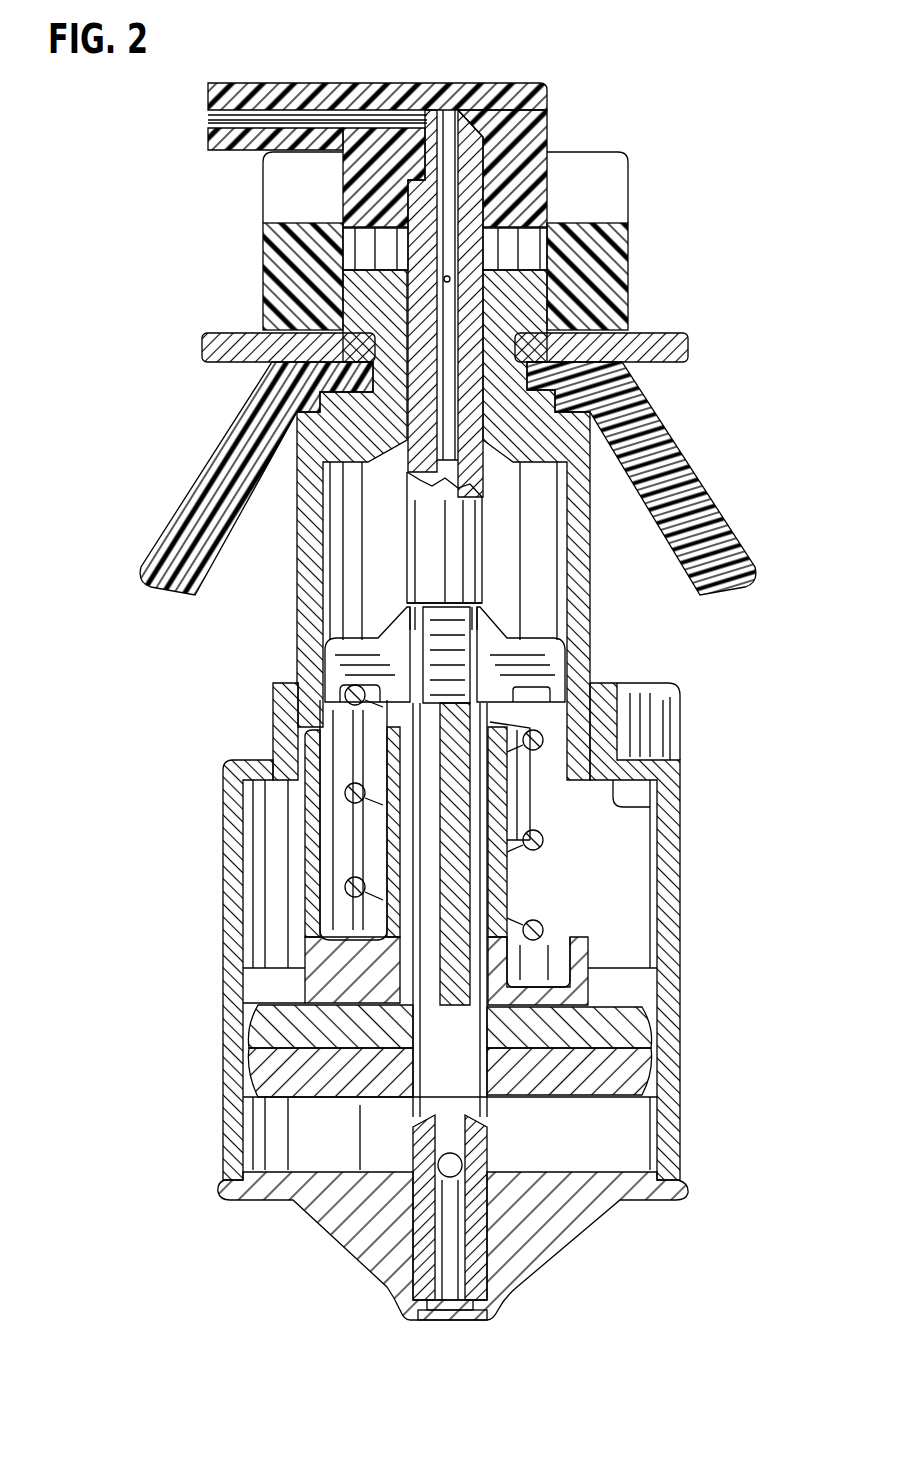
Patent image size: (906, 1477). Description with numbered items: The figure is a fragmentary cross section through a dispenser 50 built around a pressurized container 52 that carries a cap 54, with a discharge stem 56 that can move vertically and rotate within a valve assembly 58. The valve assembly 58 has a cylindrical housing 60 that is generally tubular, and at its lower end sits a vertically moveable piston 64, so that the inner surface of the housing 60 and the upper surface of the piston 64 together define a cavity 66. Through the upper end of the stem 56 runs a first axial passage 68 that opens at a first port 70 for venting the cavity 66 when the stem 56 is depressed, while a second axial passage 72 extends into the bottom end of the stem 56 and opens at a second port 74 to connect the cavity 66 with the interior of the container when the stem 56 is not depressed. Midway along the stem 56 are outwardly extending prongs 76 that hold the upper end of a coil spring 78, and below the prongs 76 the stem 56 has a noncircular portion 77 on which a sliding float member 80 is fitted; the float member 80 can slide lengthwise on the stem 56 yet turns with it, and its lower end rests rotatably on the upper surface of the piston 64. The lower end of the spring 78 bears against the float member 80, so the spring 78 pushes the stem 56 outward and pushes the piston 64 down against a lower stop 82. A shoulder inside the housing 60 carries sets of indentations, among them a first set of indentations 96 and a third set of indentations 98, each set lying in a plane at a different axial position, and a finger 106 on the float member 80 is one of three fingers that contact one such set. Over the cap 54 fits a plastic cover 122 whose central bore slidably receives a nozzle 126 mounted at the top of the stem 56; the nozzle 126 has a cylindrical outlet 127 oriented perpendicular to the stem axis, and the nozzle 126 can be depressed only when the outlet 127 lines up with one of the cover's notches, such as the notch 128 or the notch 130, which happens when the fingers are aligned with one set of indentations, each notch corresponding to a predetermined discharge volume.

The dispenser 50 is at (698, 424).
The pressurized container 52 is at (185, 487).
The cap 54 is at (215, 332).
The discharge stem 56 is at (405, 567).
The valve assembly 58 is at (680, 684).
The cylindrical housing 60 is at (233, 935).
The piston 64 is at (250, 1080).
The cavity 66 is at (633, 940).
The first axial passage 68 is at (448, 264).
The first port 70 is at (445, 277).
The second axial passage 72 is at (453, 1270).
The second port 74 is at (453, 1160).
The prongs 76 is at (542, 660).
The noncircular portion 77 is at (403, 818).
The coil spring 78 is at (555, 830).
The sliding float member 80 is at (312, 960).
The lower stop 82 is at (350, 1253).
The first set of indentations 96 is at (613, 808).
The third set of indentations 98 is at (297, 743).
The finger 106 is at (312, 843).
The plastic cover 122 is at (630, 306).
The nozzle 126 is at (548, 113).
The cylindrical outlet 127 is at (273, 83).
The notch 128 is at (593, 222).
The notch 130 is at (305, 222).